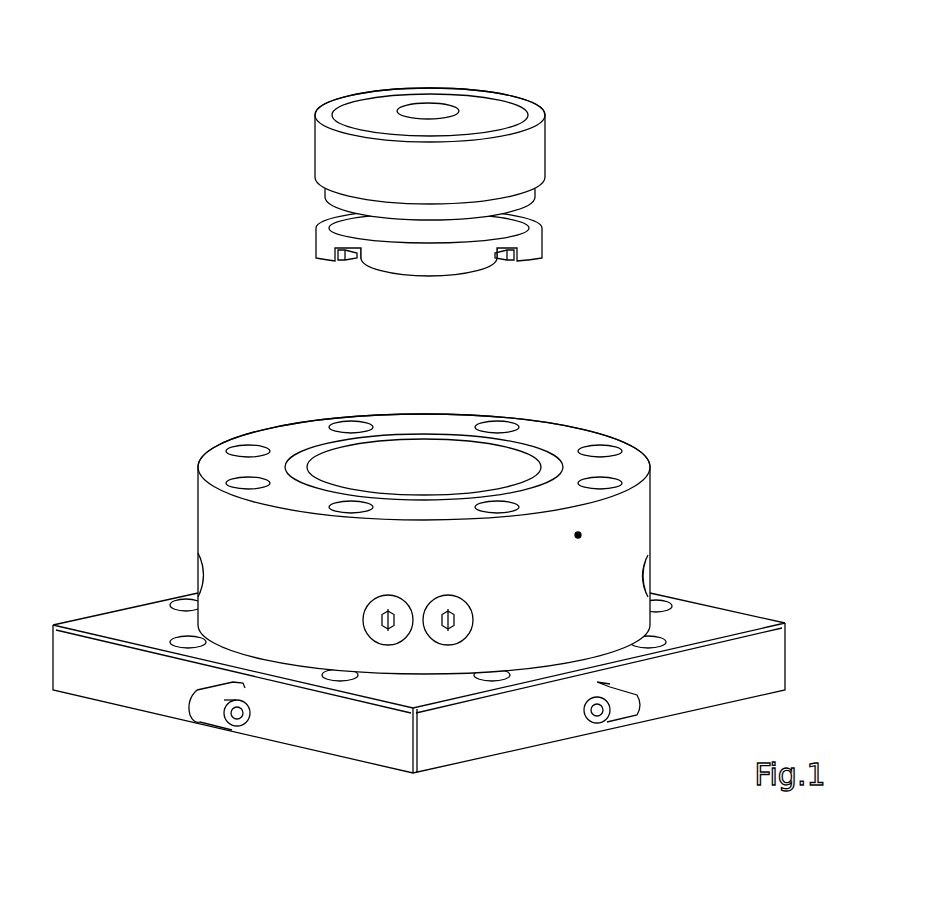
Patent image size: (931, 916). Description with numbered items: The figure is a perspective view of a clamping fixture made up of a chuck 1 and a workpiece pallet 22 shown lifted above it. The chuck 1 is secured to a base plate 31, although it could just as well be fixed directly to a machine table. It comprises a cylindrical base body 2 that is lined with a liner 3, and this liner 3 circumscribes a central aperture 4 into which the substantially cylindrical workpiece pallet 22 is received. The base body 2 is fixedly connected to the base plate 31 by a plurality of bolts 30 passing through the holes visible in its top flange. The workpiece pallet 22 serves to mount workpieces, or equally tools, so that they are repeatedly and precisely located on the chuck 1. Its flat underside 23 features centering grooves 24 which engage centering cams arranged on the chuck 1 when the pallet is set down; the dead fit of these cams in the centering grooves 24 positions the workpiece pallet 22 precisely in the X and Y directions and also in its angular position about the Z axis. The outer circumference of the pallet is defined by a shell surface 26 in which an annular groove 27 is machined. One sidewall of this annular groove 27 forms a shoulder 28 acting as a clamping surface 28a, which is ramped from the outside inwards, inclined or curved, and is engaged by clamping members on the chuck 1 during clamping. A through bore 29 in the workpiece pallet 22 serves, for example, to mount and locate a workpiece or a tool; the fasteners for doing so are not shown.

The chuck 1 is at (453, 561).
The cylindrical base body 2 is at (635, 465).
The liner 3 is at (302, 467).
The central aperture 4 is at (433, 455).
The workpiece pallet 22 is at (437, 186).
The flat underside 23 is at (430, 280).
The centering grooves 24 is at (349, 281).
The shell surface 26 is at (308, 153).
The annular groove 27 is at (315, 204).
The shoulder 28 is at (378, 230).
The clamping surface 28a is at (536, 209).
The through bore 29 is at (430, 110).
The bolts 30 is at (605, 450).
The base plate 31 is at (772, 658).